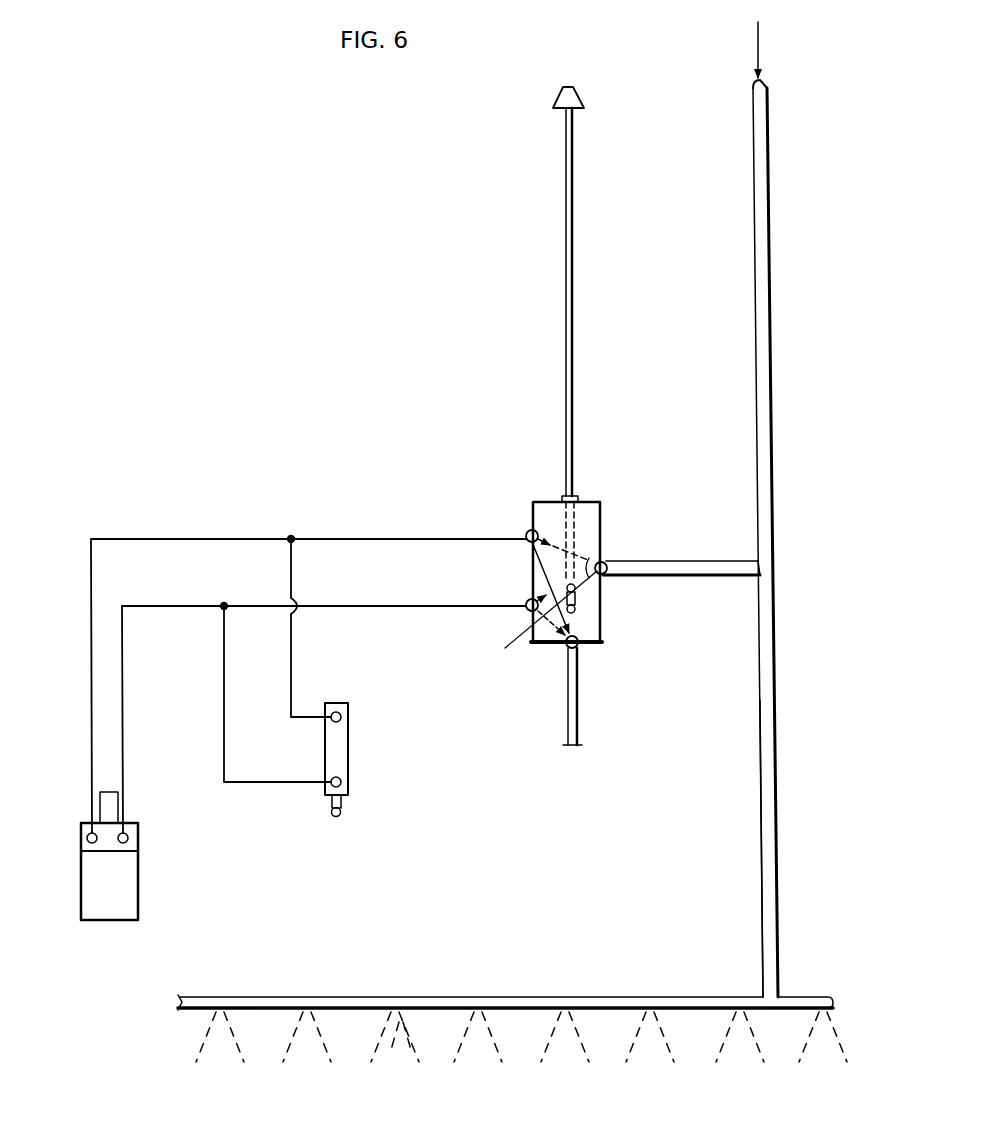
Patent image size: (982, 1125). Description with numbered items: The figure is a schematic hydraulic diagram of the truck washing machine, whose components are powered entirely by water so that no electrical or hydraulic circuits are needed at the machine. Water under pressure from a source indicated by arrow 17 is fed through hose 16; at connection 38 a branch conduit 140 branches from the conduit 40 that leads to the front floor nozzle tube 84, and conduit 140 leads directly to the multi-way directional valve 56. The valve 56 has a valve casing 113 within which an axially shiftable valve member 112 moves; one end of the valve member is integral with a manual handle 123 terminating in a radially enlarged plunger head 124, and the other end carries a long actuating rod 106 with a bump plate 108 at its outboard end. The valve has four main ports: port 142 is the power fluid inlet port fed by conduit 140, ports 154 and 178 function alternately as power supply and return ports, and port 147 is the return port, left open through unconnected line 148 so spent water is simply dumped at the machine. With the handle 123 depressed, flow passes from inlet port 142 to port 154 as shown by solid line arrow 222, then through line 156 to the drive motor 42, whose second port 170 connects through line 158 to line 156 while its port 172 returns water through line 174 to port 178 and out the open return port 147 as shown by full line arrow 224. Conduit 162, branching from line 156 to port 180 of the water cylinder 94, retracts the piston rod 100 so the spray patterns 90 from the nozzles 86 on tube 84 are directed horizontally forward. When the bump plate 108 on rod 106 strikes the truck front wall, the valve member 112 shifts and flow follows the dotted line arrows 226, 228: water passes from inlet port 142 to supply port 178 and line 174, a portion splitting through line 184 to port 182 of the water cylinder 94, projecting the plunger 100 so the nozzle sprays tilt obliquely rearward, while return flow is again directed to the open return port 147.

The hose 16 is at (757, 257).
The arrow 17 is at (757, 49).
The connection 38 is at (775, 565).
The conduit 40 is at (764, 787).
The drive motor 42 is at (125, 905).
The multi-way directional valve 56 is at (526, 667).
The floor nozzle tube 84 is at (452, 996).
The nozzles 86 is at (474, 1015).
The spray patterns 90 is at (478, 1058).
The water cylinder 94 is at (350, 759).
The piston rod 100 is at (342, 817).
The actuating rod 106 is at (565, 353).
The bump plate 108 is at (559, 97).
The valve member 112 is at (579, 499).
The valve casing 113 is at (543, 501).
The handle 123 is at (576, 613).
The plunger head 124 is at (576, 590).
The branch conduit 140 is at (700, 578).
The power fluid inlet port 142 is at (607, 566).
The power fluid return port 147 is at (578, 648).
The unconnected line 148 is at (567, 708).
The port 154 is at (528, 612).
The line 156 is at (361, 606).
The line 158 is at (181, 594).
The conduit 162 is at (227, 772).
The second port 170 is at (128, 838).
The port 172 is at (87, 839).
The line 174 is at (406, 529).
The port 178 is at (526, 535).
The port 180 is at (342, 782).
The port 182 is at (342, 718).
The line 184 is at (294, 587).
The solid line arrow 222 is at (591, 558).
The full line arrow 224 is at (542, 624).
The dotted line arrow 226 is at (557, 549).
The dotted line arrow 228 is at (553, 630).